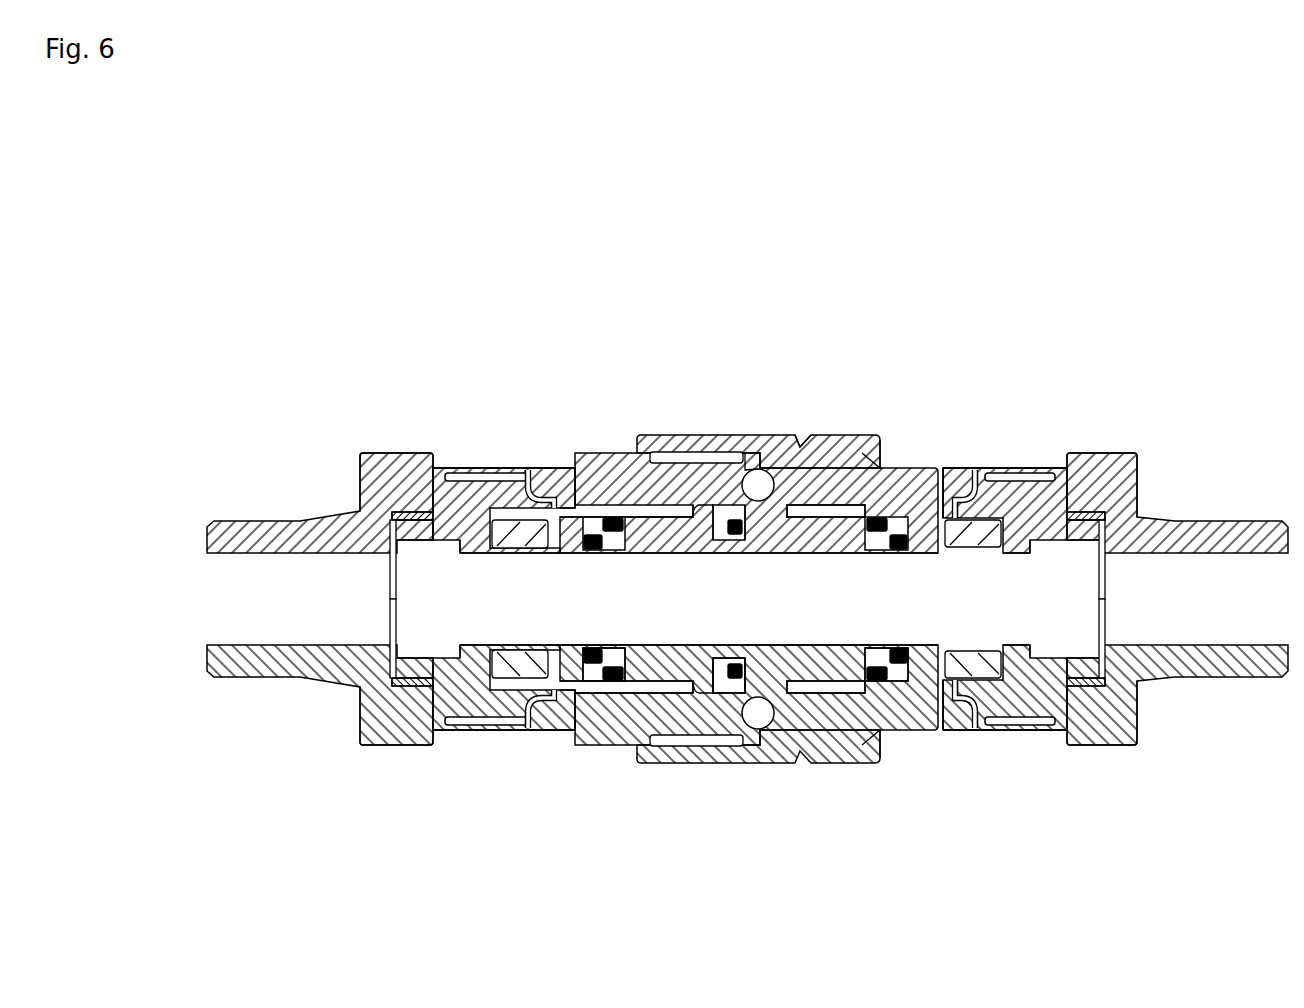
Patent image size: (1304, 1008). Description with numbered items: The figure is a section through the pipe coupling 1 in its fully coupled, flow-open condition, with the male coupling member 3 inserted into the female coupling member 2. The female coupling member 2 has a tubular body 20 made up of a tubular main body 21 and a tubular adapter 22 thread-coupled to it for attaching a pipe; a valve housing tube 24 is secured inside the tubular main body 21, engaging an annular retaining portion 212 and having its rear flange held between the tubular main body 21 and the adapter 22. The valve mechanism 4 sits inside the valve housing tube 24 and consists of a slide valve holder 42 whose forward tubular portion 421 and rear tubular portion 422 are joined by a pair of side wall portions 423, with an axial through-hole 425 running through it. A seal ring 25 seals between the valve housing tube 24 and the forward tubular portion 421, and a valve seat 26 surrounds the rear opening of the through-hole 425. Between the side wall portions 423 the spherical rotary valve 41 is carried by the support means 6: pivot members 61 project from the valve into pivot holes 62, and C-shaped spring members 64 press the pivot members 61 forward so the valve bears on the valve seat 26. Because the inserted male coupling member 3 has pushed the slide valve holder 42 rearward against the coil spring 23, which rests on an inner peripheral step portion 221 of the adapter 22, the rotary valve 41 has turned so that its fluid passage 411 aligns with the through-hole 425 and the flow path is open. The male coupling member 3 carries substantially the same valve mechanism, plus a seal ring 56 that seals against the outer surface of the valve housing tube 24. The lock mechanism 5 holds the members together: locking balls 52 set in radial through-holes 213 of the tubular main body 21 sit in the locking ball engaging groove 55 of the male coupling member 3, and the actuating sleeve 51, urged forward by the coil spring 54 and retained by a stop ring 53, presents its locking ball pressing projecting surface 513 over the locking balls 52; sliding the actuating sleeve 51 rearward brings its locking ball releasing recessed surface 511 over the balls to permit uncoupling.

The pipe coupling 1 is at (747, 543).
The female coupling member 2 is at (554, 428).
The male coupling member 3 is at (994, 446).
The valve mechanism 4 is at (456, 528).
The lock mechanism 5 is at (822, 430).
The support means 6 is at (518, 513).
The tubular body 20 is at (362, 464).
The tubular main body 21 is at (625, 515).
The tubular adapter 22 is at (376, 483).
The coil spring 23 is at (410, 520).
The valve housing tube 24 is at (703, 690).
The seal ring 25 is at (612, 672).
The valve seat 26 is at (595, 662).
The rotary valve 41 is at (570, 662).
The slide valve holder 42 is at (582, 500).
The actuating sleeve 51 is at (858, 446).
The locking balls 52 is at (762, 482).
The stop ring 53 is at (878, 470).
The coil spring 54 is at (757, 478).
The locking ball engaging groove 55 is at (766, 722).
The seal ring 56 is at (733, 450).
The pivot members 61 is at (503, 522).
The pivot holes 62 is at (521, 511).
The spring members 64 is at (497, 528).
The annular retaining portion 212 is at (700, 526).
The radial through-holes 213 is at (712, 700).
The inner peripheral step portion 221 is at (378, 530).
The fluid passage 411 is at (440, 730).
The forward tubular portion 421 is at (640, 681).
The rear tubular portion 422 is at (388, 738).
The side wall portions 423 is at (568, 520).
The through-hole 425 is at (679, 609).
The locking ball releasing recessed surface 511 is at (812, 742).
The locking ball pressing projecting surface 513 is at (753, 735).